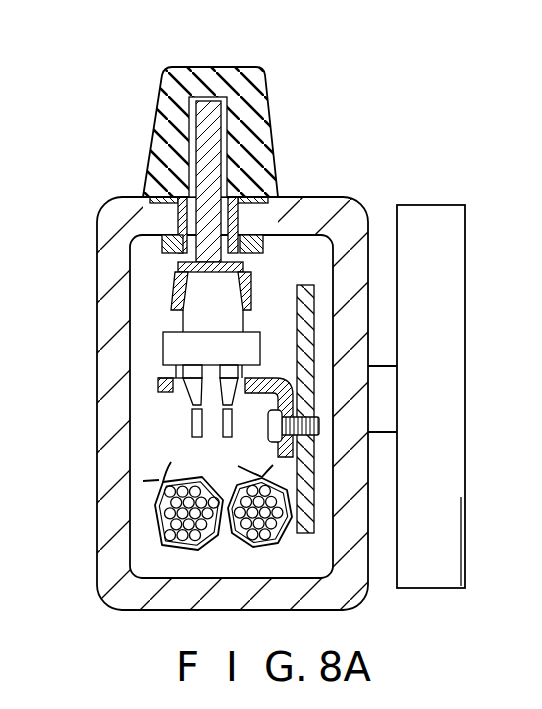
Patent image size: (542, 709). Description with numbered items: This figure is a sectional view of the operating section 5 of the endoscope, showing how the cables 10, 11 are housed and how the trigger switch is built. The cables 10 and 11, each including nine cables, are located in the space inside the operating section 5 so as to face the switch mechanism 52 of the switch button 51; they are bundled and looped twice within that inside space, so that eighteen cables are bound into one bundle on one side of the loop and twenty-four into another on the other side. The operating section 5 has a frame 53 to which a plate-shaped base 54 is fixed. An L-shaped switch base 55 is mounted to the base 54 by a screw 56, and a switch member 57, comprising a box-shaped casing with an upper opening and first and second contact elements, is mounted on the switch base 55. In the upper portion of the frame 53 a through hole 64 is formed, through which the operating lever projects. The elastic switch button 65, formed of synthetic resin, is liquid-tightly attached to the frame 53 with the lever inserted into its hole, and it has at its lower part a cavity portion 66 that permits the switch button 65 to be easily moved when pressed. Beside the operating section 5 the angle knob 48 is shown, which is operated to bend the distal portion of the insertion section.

The operating section 5 is at (222, 381).
The cable 10 is at (165, 527).
The cable 11 is at (260, 506).
The angle knob 48 is at (468, 276).
The switch button 51 is at (283, 95).
The switch mechanism 52 is at (158, 383).
The frame 53 is at (100, 277).
The plate-shaped base 54 is at (298, 291).
The L-shaped switch base 55 is at (278, 384).
The screw 56 is at (272, 440).
The switch member 57 is at (250, 340).
The through hole 64 is at (246, 222).
The switch button (elastic) 65 is at (201, 77).
The cavity portion 66 is at (177, 176).